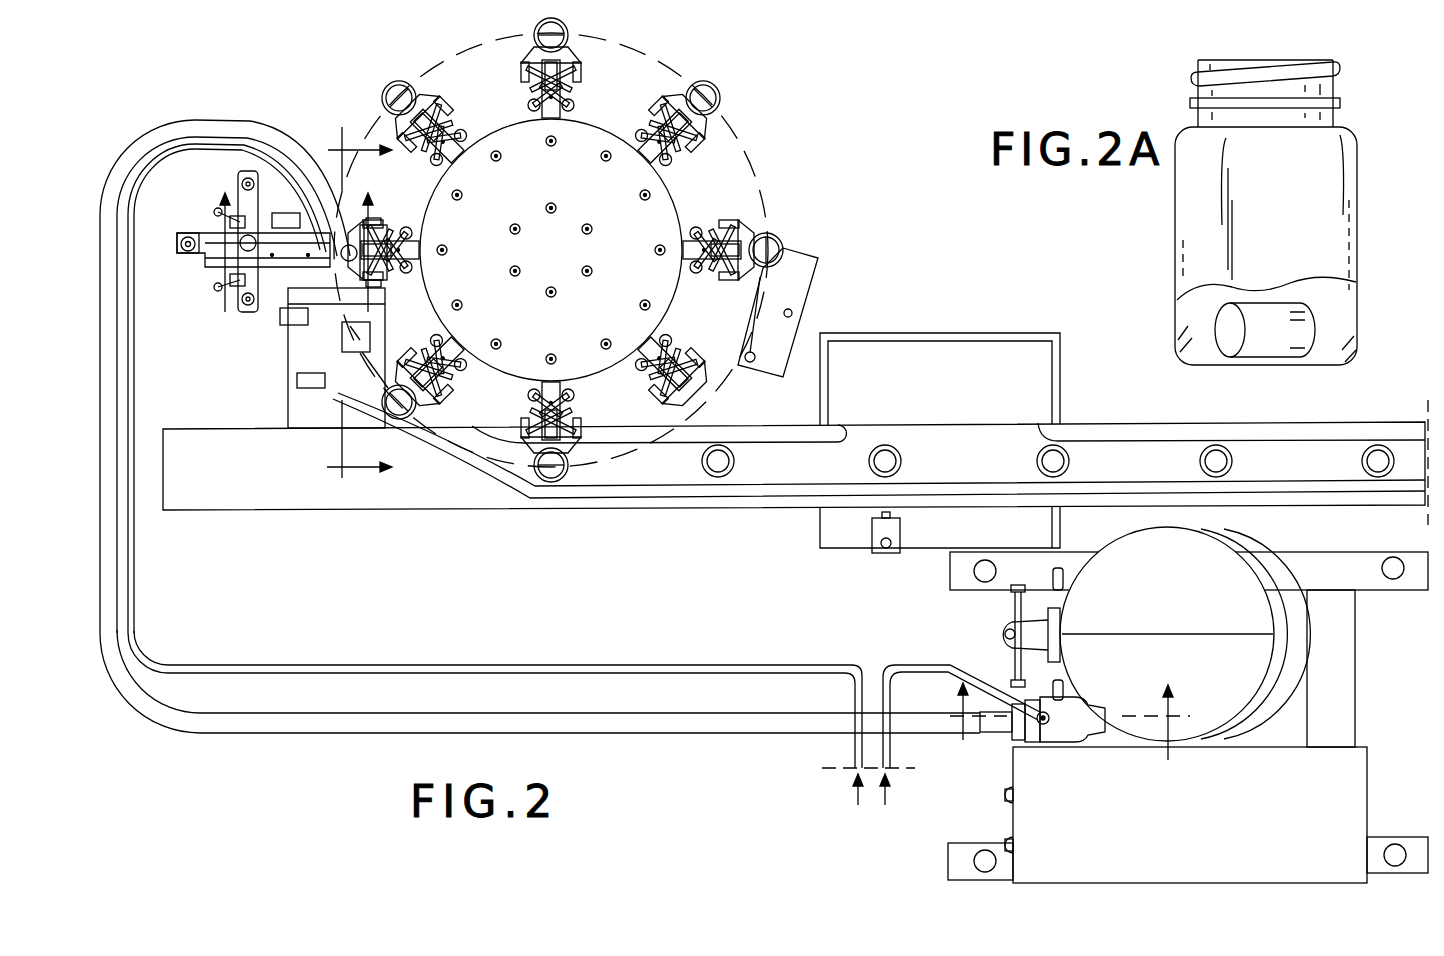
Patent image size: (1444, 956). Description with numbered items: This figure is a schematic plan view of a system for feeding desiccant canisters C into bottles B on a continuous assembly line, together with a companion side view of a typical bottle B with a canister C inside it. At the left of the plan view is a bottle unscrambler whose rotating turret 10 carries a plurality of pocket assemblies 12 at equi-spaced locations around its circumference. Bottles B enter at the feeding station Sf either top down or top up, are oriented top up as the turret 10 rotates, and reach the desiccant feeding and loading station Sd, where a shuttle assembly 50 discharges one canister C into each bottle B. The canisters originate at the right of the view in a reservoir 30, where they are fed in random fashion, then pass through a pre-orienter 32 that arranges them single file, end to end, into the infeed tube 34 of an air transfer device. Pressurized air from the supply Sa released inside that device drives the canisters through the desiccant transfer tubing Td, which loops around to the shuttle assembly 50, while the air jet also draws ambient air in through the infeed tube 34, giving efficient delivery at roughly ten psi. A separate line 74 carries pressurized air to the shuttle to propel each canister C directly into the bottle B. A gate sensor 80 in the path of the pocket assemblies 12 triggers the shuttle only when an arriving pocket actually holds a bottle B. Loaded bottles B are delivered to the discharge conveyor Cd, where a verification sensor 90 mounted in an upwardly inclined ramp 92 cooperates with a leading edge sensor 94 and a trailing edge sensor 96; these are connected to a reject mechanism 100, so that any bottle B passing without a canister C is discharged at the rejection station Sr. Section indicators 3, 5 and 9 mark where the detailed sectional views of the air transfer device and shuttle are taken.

In FIG. 2, the shuttle assembly 50 is at (273, 247).
In FIG. 2, the gate sensor 80 is at (287, 213).
In FIG. 2, the section line 5- 5 is at (295, 253).
In FIG. 2, the section line 9- 9 is at (359, 305).
In FIG. 2, the rotating turret 10 is at (668, 207).
In FIG. 2, the pocket assemblies 12 is at (433, 88).
In FIG. 2, the verification sensor 90 is at (365, 338).
In FIG. 2, the upwardly inclined ramp 92 is at (288, 365).
In FIG. 2, the leading edge sensor 94 is at (280, 318).
In FIG. 2, the trailing edge sensor 96 is at (297, 383).
In FIG. 2, the reject mechanism 100 is at (882, 556).
In FIG. 2, the reservoir 30 is at (1190, 588).
In FIG. 2, the pre-orienter 32 is at (1300, 640).
In FIG. 2, the infeed tube 34 is at (1095, 735).
In FIG. 2, the line 74 is at (662, 663).
In FIG. 2, the section line 3- 3 is at (1070, 737).
In FIG. 2, the bottle B is at (394, 87).
In FIG. 2A, the bottle B is at (1175, 228).
In FIG. 2A, the desiccant canister C is at (1300, 318).
In FIG. 2, the desiccant transfer tubing Td is at (212, 118).
In FIG. 2, the desiccant feeding and loading station Sd is at (437, 213).
In FIG. 2, the feeding station Sf is at (760, 318).
In FIG. 2, the rejection station Sr is at (985, 345).
In FIG. 2, the discharge conveyor Cd is at (1108, 425).
In FIG. 2, the pressurized air supply Sa is at (870, 808).